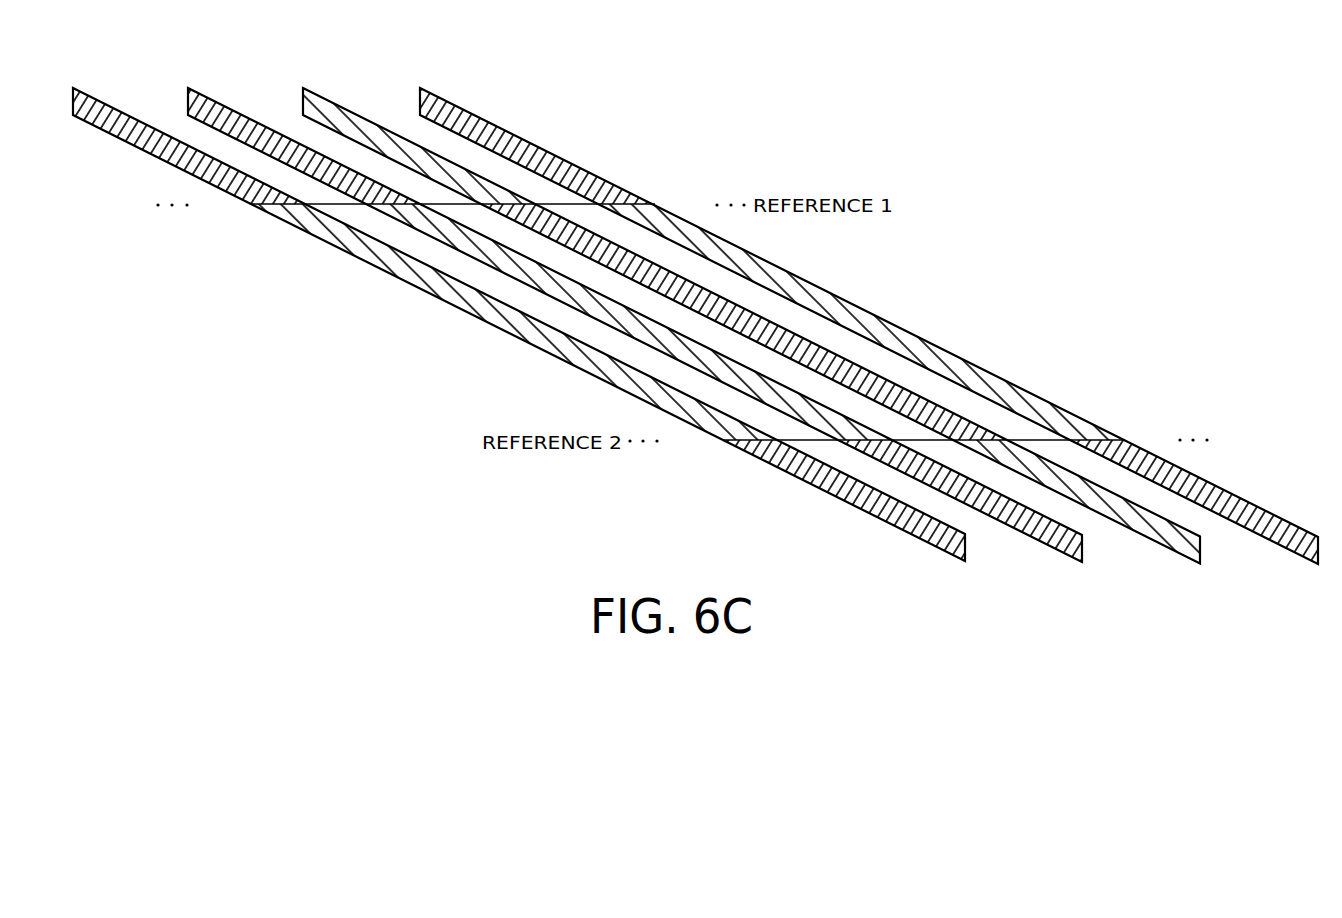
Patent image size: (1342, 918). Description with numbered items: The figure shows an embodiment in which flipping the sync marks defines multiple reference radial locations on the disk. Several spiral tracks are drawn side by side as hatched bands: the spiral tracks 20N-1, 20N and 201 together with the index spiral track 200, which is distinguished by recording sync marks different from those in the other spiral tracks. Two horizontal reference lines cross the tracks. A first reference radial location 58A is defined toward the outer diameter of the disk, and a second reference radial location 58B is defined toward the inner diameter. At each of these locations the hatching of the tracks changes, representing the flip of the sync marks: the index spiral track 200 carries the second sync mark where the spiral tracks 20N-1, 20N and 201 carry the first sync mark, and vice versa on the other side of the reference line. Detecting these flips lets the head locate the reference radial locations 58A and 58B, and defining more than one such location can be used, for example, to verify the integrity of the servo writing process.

The spiral track 20N-1 is at (98, 99).
The spiral track 20N is at (213, 99).
The index spiral track 200 is at (328, 99).
The spiral track 201 is at (448, 99).
The first reference radial location 58A is at (661, 195).
The second reference radial location 58B is at (1128, 433).